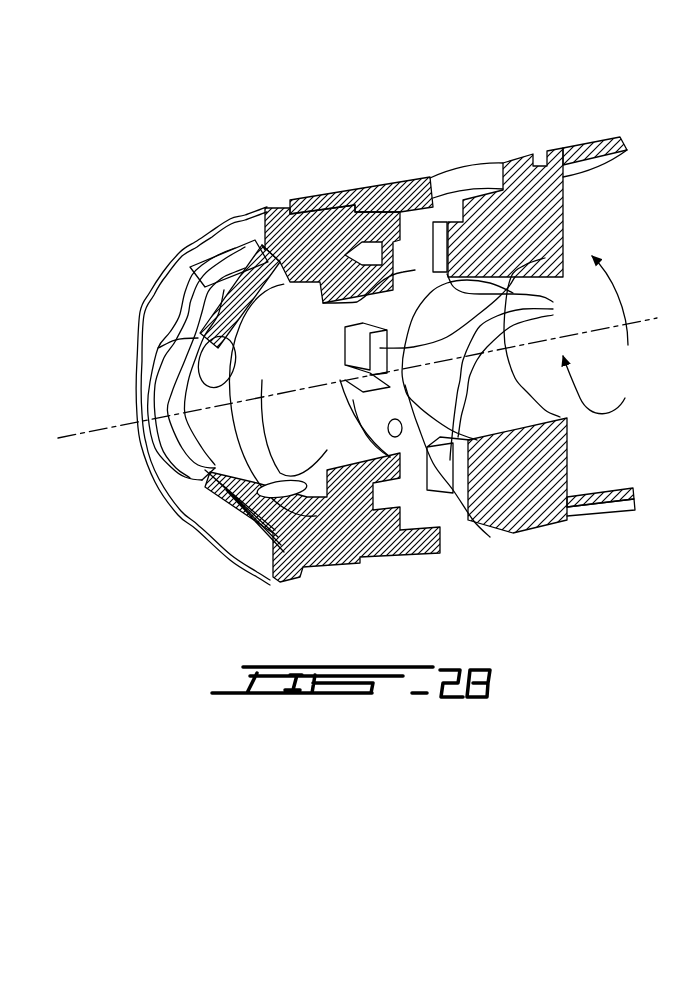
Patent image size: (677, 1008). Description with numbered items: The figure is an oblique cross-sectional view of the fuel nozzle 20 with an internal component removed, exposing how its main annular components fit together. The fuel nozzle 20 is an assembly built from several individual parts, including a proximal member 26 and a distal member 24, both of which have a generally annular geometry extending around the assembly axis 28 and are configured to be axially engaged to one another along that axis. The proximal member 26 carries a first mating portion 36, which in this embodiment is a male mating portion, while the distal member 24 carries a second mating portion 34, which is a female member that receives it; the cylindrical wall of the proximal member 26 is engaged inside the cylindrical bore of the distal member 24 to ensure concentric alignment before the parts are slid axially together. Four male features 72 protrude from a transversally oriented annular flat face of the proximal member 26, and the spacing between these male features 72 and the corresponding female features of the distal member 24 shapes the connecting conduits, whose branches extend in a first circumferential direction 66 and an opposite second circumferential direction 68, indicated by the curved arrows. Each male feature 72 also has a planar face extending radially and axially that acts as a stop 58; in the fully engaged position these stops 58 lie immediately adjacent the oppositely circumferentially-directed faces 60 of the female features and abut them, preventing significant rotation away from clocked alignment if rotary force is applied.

The fuel nozzle 20 is at (194, 168).
The distal member 24 is at (268, 202).
The proximal member 26 is at (553, 149).
The assembly axis 28 is at (92, 432).
The second mating portion 34 is at (415, 188).
The first mating portion 36 is at (472, 193).
The stop 58 is at (263, 263).
The circumferentially-directed faces of the female features 60 is at (373, 193).
The first circumferential direction 66 is at (588, 400).
The second circumferential direction 68 is at (618, 298).
The male feature 72 is at (482, 397).